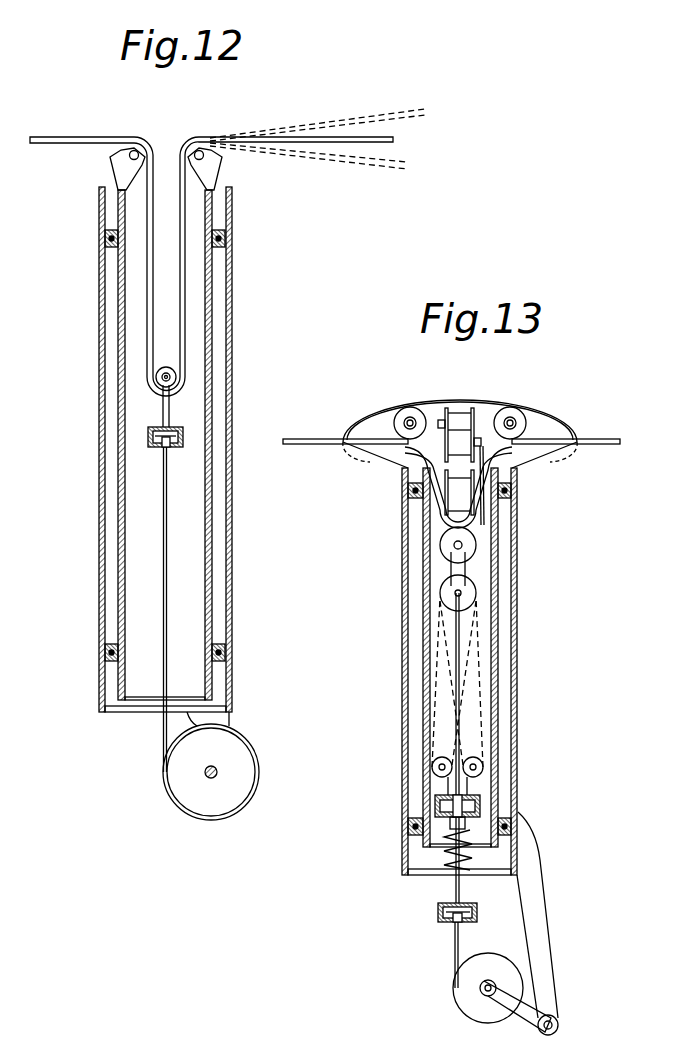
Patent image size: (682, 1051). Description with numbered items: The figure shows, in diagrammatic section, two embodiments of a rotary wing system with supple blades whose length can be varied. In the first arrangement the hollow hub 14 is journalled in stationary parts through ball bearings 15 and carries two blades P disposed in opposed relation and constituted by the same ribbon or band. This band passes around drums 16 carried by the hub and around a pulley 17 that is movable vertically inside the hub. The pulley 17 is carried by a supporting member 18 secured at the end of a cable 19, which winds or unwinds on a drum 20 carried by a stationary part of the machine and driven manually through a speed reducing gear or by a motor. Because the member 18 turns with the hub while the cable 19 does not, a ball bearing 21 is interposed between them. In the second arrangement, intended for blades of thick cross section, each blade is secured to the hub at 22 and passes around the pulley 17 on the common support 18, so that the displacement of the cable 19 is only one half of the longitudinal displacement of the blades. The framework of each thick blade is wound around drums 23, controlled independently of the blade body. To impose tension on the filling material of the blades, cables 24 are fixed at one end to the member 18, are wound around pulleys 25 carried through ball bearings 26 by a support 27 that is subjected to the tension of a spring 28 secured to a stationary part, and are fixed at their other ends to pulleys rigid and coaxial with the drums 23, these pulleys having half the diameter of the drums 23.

In FIG. 12, the blades P is at (84, 137).
In FIG. 13, the blades P is at (318, 439).
In FIG. 12, the hub 14 is at (232, 322).
In FIG. 13, the hub 14 is at (517, 548).
In FIG. 12, the ball bearings 15 is at (226, 238).
In FIG. 13, the ball bearings 15 is at (408, 490).
In FIG. 12, the drums 16 is at (136, 150).
In FIG. 12, the pulley 17 is at (156, 376).
In FIG. 13, the pulley 17 is at (441, 546).
In FIG. 12, the supporting member 18 is at (170, 395).
In FIG. 13, the supporting member 18 is at (455, 566).
In FIG. 12, the cable 19 is at (163, 476).
In FIG. 13, the cable 19 is at (460, 683).
In FIG. 12, the drum 20 is at (232, 758).
In FIG. 13, the drum 20 is at (505, 923).
In FIG. 12, the ball bearing 21 is at (184, 437).
In FIG. 13, the ball bearing 21 is at (438, 916).
In FIG. 13, the blade securing point 22 is at (474, 435).
In FIG. 13, the drums 23 is at (409, 419).
In FIG. 13, the cables 24 is at (478, 637).
In FIG. 13, the pulleys 25 is at (476, 770).
In FIG. 13, the ball bearings 26 is at (436, 806).
In FIG. 13, the support 27 is at (466, 826).
In FIG. 13, the spring 28 is at (472, 857).